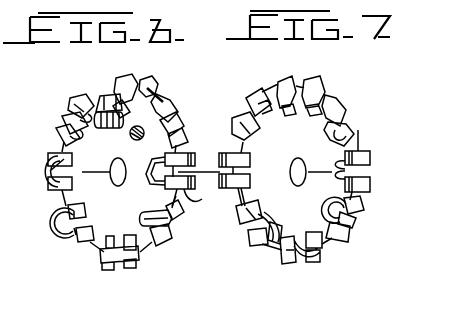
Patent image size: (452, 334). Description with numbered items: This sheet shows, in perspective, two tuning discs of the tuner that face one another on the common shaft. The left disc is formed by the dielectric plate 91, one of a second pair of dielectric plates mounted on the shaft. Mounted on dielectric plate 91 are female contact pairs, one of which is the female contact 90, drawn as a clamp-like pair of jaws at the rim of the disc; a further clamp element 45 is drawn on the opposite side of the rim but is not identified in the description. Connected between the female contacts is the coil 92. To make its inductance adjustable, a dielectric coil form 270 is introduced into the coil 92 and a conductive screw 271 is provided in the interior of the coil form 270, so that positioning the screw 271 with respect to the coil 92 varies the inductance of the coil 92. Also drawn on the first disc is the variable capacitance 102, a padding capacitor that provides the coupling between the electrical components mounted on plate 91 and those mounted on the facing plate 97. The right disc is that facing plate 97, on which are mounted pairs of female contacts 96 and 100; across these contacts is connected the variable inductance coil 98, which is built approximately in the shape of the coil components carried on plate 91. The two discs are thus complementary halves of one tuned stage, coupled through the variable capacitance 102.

In FIG. 6, the clamp 45 is at (187, 158).
In FIG. 6, the female contact 90 is at (196, 201).
In FIG. 6, the dielectric plate 91 is at (156, 91).
In FIG. 6, the coil 92 is at (117, 98).
In FIG. 6, the dielectric coil form 270 is at (100, 114).
In FIG. 6, the conductive screw 271 is at (104, 128).
In FIG. 6, the variable capacitance 102 is at (137, 140).
In FIG. 7, the dielectric plate 97 is at (371, 144).
In FIG. 7, the variable inductance coil 98 is at (320, 202).
In FIG. 7, the female contact 100 is at (362, 222).
In FIG. 7, the female contact 96 is at (352, 238).